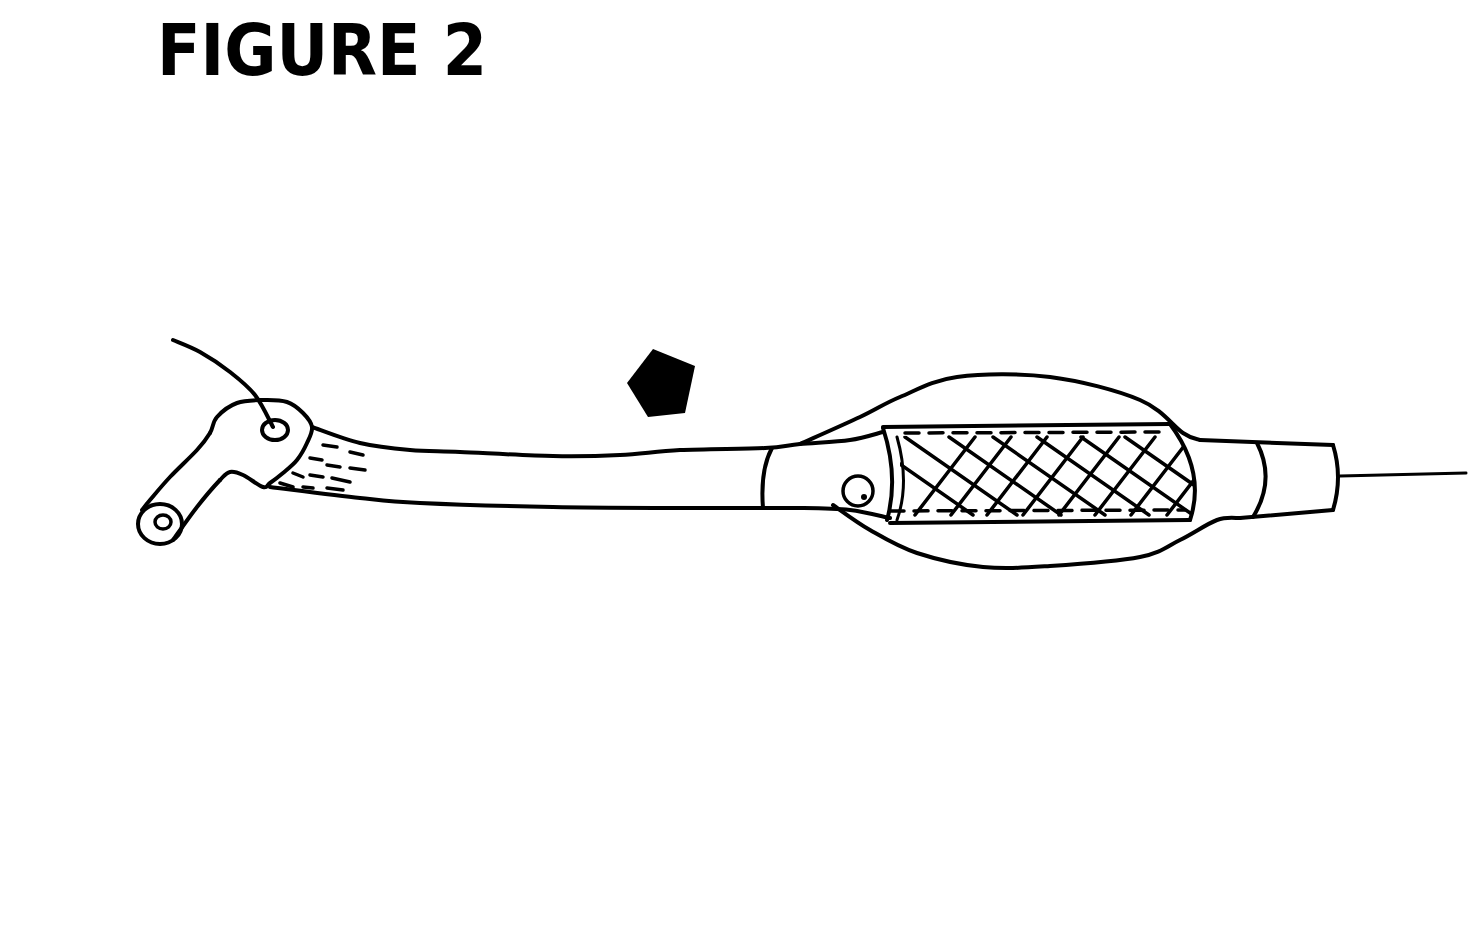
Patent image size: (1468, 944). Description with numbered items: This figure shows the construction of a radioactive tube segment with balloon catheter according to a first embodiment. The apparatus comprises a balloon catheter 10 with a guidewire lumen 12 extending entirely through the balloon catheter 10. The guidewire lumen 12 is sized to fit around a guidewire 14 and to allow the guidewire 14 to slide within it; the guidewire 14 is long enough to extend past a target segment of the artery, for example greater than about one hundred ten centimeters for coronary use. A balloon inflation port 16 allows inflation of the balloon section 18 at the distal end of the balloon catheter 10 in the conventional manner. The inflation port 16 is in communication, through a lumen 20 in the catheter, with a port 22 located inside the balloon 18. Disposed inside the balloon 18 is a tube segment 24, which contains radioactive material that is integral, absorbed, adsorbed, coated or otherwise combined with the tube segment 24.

The balloon catheter 10 is at (688, 378).
The guidewire lumen 12 is at (340, 452).
The guidewire 14 is at (224, 370).
The balloon inflation port 16 is at (160, 533).
The balloon section 18 is at (957, 372).
The lumen 20 is at (306, 489).
The port 22 is at (850, 497).
The tube segment 24 is at (930, 513).